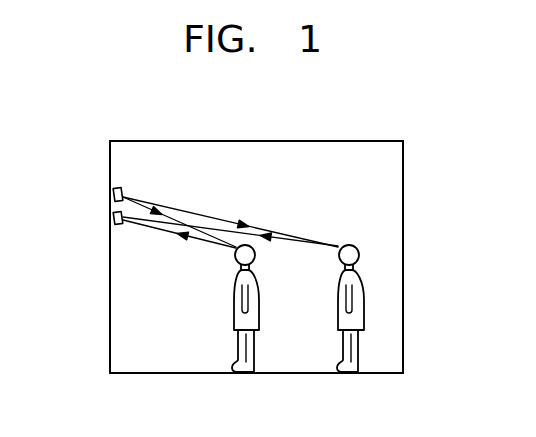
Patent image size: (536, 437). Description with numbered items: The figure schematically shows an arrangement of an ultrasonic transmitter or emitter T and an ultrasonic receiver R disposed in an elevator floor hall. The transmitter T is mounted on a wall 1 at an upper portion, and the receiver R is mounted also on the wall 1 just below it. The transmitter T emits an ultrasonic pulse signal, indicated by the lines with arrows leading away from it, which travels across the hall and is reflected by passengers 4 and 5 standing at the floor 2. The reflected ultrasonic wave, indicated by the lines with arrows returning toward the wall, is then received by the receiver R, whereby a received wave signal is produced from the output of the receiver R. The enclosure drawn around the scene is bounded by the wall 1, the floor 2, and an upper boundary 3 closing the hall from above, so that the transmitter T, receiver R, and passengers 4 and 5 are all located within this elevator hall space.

The wall 1 is at (110, 313).
The floor 2 is at (191, 373).
The ceiling 3 is at (264, 141).
The ultrasonic transmitter T is at (118, 188).
The ultrasonic receiver R is at (118, 224).
The passenger 4 is at (234, 304).
The passenger 5 is at (338, 304).